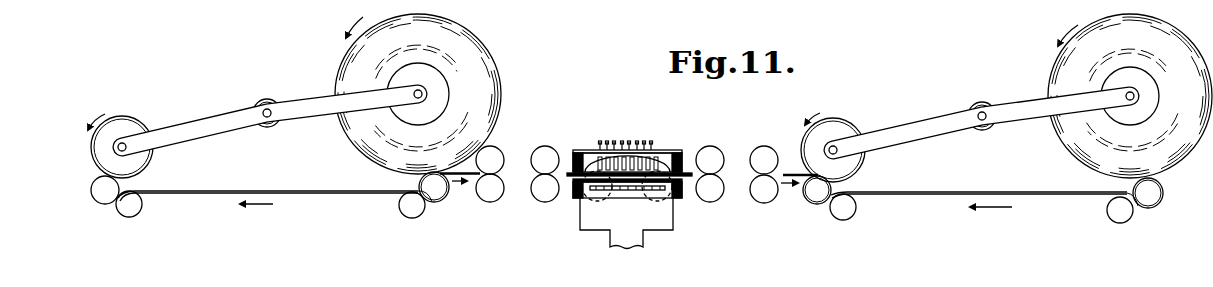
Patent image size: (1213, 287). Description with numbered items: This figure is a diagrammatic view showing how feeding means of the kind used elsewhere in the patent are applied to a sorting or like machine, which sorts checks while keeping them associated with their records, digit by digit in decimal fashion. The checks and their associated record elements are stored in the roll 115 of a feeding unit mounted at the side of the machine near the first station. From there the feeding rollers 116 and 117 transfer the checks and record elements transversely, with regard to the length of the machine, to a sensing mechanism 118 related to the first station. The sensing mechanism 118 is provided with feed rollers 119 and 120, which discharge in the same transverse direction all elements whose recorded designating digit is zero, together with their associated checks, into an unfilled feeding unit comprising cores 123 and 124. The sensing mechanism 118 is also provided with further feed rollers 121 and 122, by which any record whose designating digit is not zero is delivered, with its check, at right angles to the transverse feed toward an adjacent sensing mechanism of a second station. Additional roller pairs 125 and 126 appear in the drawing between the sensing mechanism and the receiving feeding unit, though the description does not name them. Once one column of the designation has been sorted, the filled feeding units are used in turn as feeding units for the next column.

The roll 115 is at (477, 47).
The feeding roller 116 is at (498, 146).
The feeding roller 117 is at (549, 145).
The sensing mechanism 118 is at (665, 147).
The feed roller 119 is at (593, 202).
The feed roller 120 is at (657, 202).
The feed roller 121 is at (573, 199).
The feed roller 122 is at (683, 199).
The core 123 is at (838, 128).
The core 124 is at (1113, 82).
The feed rollers 125 is at (763, 156).
The feed rollers 126 is at (707, 155).